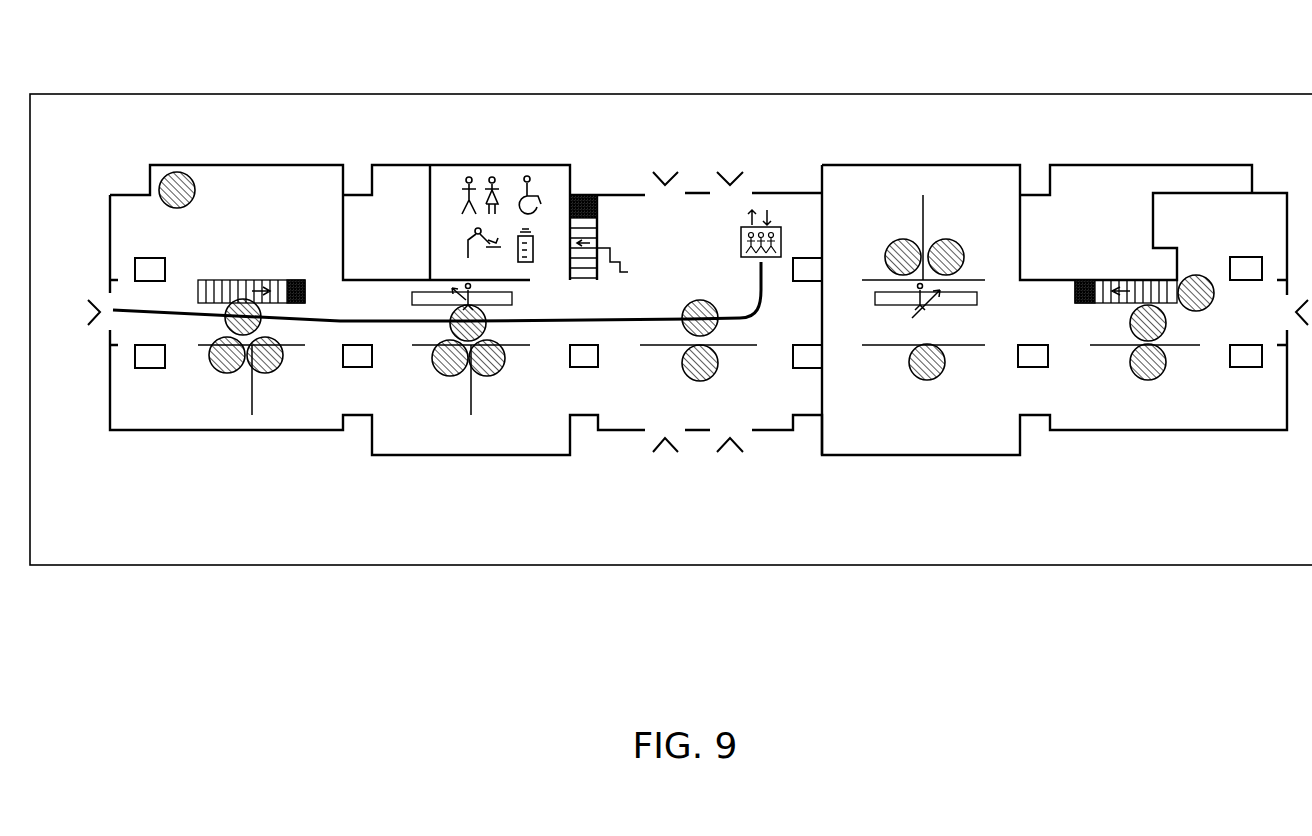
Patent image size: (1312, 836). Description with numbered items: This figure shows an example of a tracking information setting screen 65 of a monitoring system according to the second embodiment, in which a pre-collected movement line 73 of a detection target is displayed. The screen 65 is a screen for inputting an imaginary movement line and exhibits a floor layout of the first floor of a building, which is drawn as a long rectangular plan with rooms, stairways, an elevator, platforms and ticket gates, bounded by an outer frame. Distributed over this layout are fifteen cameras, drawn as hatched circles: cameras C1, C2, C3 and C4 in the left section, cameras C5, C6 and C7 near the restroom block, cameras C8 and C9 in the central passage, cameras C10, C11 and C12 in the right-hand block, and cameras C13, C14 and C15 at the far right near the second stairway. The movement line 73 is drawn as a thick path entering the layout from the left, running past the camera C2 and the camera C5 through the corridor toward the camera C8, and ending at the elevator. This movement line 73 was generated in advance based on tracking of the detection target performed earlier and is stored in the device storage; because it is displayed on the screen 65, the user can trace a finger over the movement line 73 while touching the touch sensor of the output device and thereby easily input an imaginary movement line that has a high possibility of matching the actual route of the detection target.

The screen 65 is at (1218, 94).
The movement line 73 is at (383, 318).
The camera C1 is at (184, 173).
The camera C2 is at (225, 322).
The camera C3 is at (229, 374).
The camera C4 is at (280, 367).
The camera C5 is at (452, 332).
The camera C6 is at (448, 377).
The camera C7 is at (490, 378).
The camera C8 is at (700, 300).
The camera C9 is at (700, 382).
The camera C10 is at (895, 242).
The camera C11 is at (952, 242).
The camera C12 is at (918, 383).
The camera C13 is at (1133, 318).
The camera C14 is at (1203, 313).
The camera C15 is at (1141, 381).